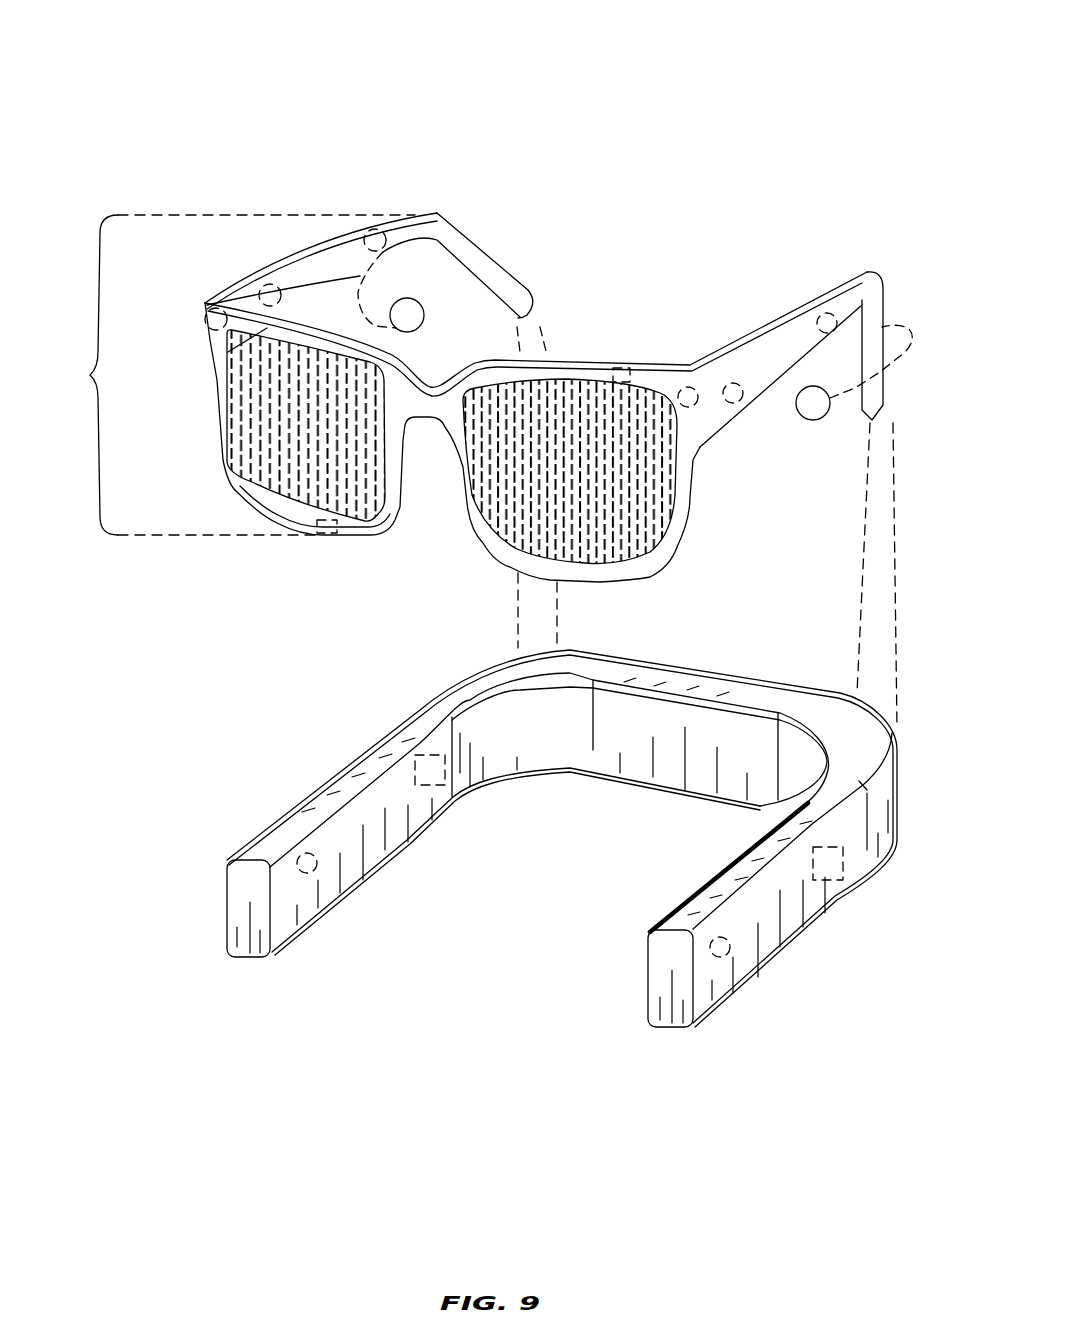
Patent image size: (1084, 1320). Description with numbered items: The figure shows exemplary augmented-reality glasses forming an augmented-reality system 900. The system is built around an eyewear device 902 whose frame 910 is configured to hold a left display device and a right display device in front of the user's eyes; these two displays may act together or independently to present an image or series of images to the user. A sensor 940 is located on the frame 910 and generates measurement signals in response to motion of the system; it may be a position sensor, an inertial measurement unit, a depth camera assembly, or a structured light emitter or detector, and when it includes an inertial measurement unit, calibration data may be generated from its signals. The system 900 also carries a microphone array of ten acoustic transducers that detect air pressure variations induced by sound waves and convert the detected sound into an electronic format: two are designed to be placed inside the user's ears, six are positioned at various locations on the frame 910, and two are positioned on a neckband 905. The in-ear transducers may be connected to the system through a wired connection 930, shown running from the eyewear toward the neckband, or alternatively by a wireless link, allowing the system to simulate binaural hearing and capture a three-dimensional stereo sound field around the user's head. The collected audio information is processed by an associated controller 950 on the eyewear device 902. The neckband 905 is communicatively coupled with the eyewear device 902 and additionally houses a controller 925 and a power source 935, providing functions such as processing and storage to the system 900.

The augmented-reality system 900 is at (126, 103).
The eyewear device 902 is at (229, 375).
The neckband 905 is at (225, 957).
The frame 910 is at (437, 227).
The controller 925 is at (827, 872).
The wired connection 930 is at (887, 590).
The power source 935 is at (433, 773).
The sensor 940 is at (320, 531).
The controller 950 is at (616, 368).